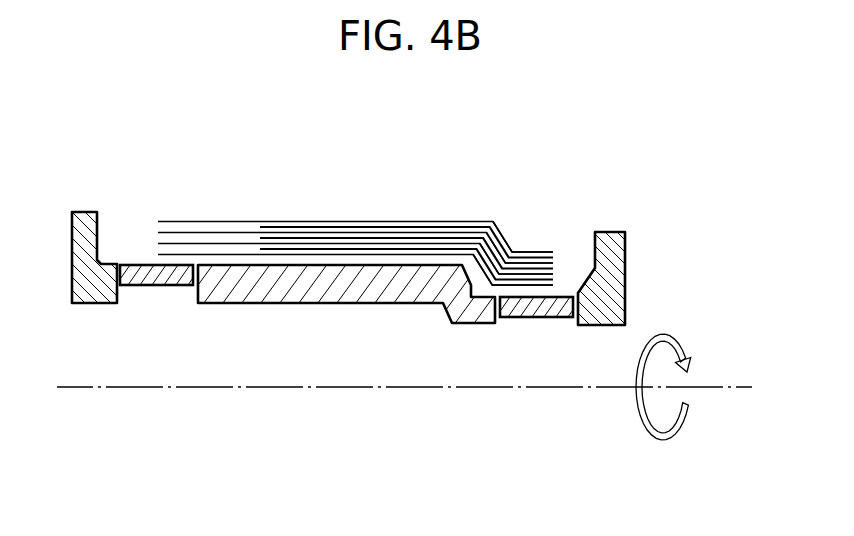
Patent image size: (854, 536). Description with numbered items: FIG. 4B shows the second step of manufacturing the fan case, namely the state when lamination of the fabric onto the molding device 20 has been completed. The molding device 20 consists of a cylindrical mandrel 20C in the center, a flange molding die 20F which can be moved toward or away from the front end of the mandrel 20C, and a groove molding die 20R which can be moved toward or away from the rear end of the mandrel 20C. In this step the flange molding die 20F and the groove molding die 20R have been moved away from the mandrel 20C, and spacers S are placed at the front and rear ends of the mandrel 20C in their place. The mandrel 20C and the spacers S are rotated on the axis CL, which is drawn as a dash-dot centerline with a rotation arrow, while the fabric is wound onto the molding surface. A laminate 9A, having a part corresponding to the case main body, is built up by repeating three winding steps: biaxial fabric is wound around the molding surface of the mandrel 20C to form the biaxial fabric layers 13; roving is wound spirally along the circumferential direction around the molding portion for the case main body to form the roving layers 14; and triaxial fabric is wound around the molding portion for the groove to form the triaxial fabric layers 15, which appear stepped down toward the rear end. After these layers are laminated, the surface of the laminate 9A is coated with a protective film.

The molding device 20 is at (355, 238).
The flange molding die 20F is at (86, 211).
The cylindrical mandrel 20C is at (385, 265).
The groove molding die 20R is at (610, 232).
The biaxial fabric layers 13 is at (190, 255).
The roving layers 14 is at (295, 227).
The triaxial fabric layers 15 is at (508, 282).
The laminate 9A is at (490, 188).
The spacers S is at (162, 287).
The axis CL is at (727, 383).